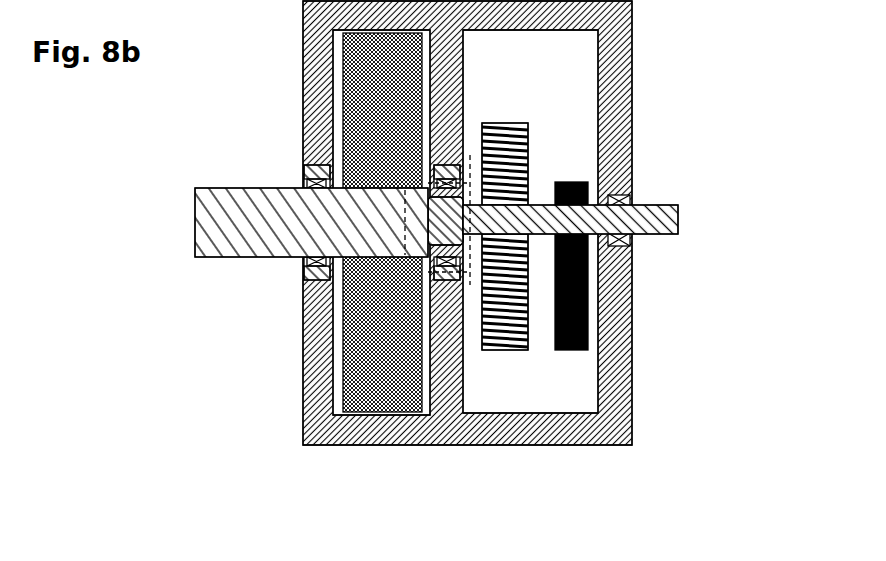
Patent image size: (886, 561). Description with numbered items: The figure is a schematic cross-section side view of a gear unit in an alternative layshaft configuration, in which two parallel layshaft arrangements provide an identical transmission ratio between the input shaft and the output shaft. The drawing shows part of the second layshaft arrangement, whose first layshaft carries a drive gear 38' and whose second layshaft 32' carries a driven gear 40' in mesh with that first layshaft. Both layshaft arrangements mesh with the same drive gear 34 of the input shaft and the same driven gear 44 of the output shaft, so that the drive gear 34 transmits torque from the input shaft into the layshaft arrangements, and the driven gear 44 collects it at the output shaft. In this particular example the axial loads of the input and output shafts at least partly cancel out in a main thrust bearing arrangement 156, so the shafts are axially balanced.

The drive gear 34 is at (383, 117).
The main thrust bearing arrangement 156 is at (425, 183).
The drive gear 38' is at (537, 159).
The driven gear 40' is at (355, 361).
The second layshaft 32' is at (655, 233).
The driven gear 44 is at (612, 243).